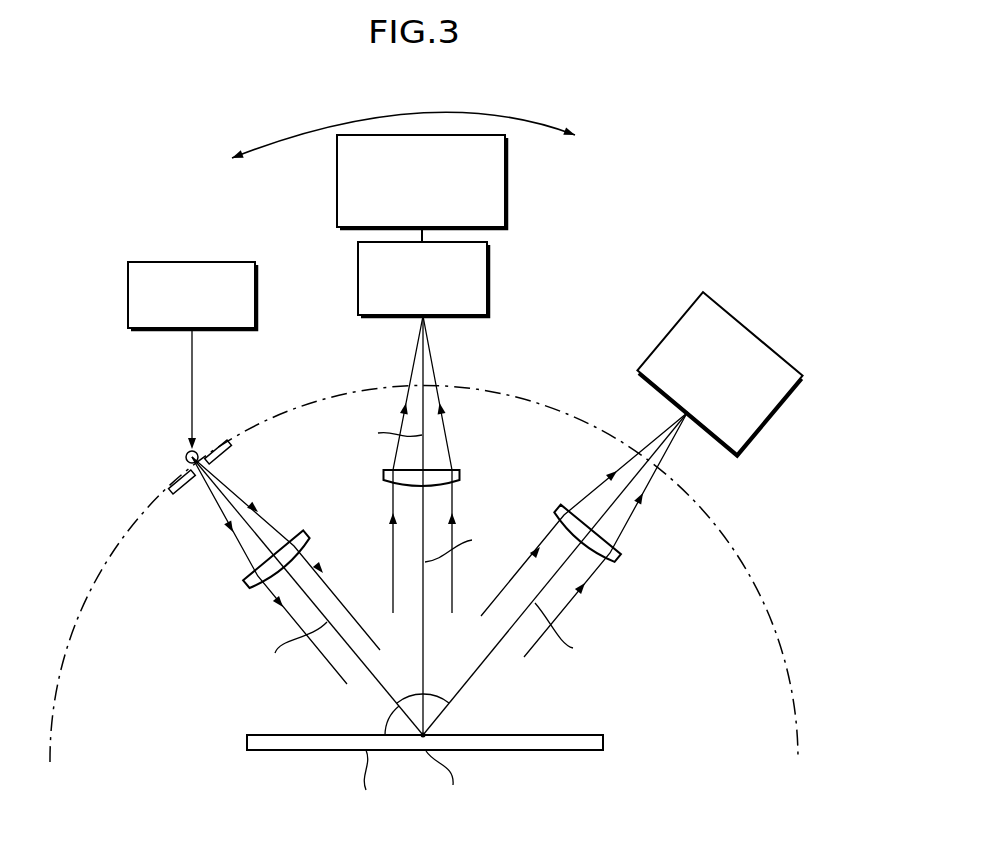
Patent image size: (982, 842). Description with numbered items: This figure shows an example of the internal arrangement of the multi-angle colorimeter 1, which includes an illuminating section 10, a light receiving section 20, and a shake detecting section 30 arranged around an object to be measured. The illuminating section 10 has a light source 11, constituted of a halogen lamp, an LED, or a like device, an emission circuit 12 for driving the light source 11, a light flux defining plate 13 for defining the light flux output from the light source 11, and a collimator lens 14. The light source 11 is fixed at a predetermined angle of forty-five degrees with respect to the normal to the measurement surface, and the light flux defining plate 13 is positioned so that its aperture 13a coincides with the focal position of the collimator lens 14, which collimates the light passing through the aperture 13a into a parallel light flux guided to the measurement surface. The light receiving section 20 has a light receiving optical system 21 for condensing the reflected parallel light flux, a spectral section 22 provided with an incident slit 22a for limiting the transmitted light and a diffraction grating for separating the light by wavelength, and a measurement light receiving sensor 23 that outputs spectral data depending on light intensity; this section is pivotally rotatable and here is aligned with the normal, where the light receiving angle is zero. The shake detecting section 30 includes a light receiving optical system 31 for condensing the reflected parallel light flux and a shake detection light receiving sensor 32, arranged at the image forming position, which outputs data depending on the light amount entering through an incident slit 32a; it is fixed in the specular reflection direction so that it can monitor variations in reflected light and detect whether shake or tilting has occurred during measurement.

The multi-angle colorimeter 1 is at (780, 139).
The illuminating section 10 is at (80, 306).
The light source 11 is at (186, 452).
The emission circuit 12 is at (240, 262).
The light flux defining plate 13 is at (233, 444).
The aperture 13a is at (197, 488).
The collimator lens 14 is at (309, 536).
The light receiving section 20 is at (535, 292).
The light receiving optical system 21 is at (462, 476).
The spectral section 22 is at (488, 268).
The incident slit 22a is at (425, 317).
The measurement light receiving sensor 23 is at (506, 185).
The shake detecting section 30 is at (759, 468).
The light receiving optical system 31 is at (616, 562).
The shake detection light receiving sensor 32 is at (777, 413).
The incident slit 32a is at (688, 418).